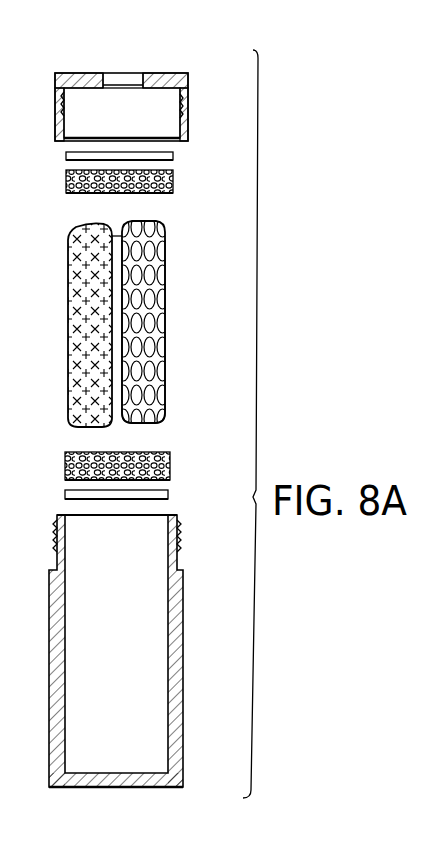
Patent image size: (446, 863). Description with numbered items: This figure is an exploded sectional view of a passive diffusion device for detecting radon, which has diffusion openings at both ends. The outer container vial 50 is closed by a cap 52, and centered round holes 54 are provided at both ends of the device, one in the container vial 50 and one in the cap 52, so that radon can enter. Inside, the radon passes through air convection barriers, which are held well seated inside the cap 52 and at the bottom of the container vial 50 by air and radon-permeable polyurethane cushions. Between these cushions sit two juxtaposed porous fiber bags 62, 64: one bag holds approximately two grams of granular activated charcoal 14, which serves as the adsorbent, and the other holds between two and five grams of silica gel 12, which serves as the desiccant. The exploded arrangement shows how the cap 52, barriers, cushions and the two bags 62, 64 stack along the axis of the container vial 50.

The silica gel 12 is at (155, 268).
The granular activated charcoal 14 is at (83, 302).
The container vial 50 is at (183, 640).
The cap 52 is at (189, 90).
The centered round holes 54 is at (128, 72).
The porous fiber bag 62 is at (107, 226).
The porous fiber bag 64 is at (162, 320).